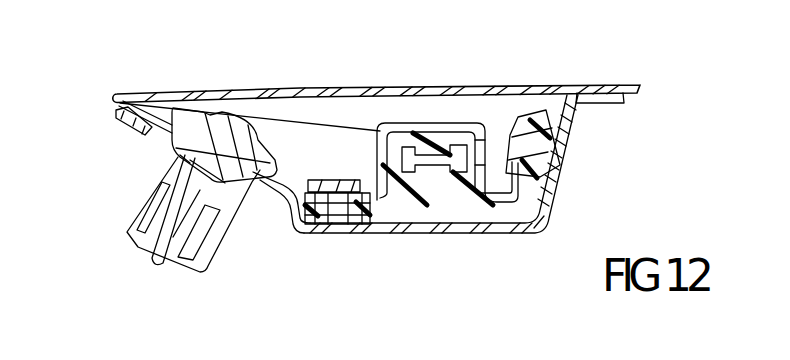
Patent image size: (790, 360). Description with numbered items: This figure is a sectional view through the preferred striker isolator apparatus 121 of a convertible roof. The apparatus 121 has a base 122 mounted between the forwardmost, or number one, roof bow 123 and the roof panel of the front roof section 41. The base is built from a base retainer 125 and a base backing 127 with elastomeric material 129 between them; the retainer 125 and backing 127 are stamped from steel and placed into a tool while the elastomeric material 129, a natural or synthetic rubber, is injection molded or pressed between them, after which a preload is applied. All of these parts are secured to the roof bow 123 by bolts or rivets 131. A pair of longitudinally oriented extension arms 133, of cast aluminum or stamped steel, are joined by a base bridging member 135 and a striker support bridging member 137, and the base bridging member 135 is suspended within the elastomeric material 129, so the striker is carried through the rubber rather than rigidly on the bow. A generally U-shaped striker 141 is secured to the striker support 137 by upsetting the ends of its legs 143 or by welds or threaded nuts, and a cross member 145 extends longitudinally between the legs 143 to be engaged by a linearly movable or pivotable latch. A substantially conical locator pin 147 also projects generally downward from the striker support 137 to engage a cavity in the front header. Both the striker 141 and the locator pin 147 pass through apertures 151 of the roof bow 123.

The front roof section 41 is at (415, 91).
The striker isolator apparatus 121 is at (112, 182).
The base 122 is at (440, 262).
The roof bow 123 is at (550, 178).
The base retainer 125 is at (465, 132).
The base backing 127 is at (479, 224).
The elastomeric material 129 is at (474, 155).
The bolts or rivets 131 is at (528, 115).
The extension arms 133 is at (275, 128).
The base bridging member 135 is at (395, 135).
The striker support bridging member 137 is at (212, 118).
The striker 141 is at (199, 273).
The legs 143 is at (139, 208).
The cross member 145 is at (145, 250).
The locator pin 147 is at (127, 233).
The apertures 151 is at (172, 140).